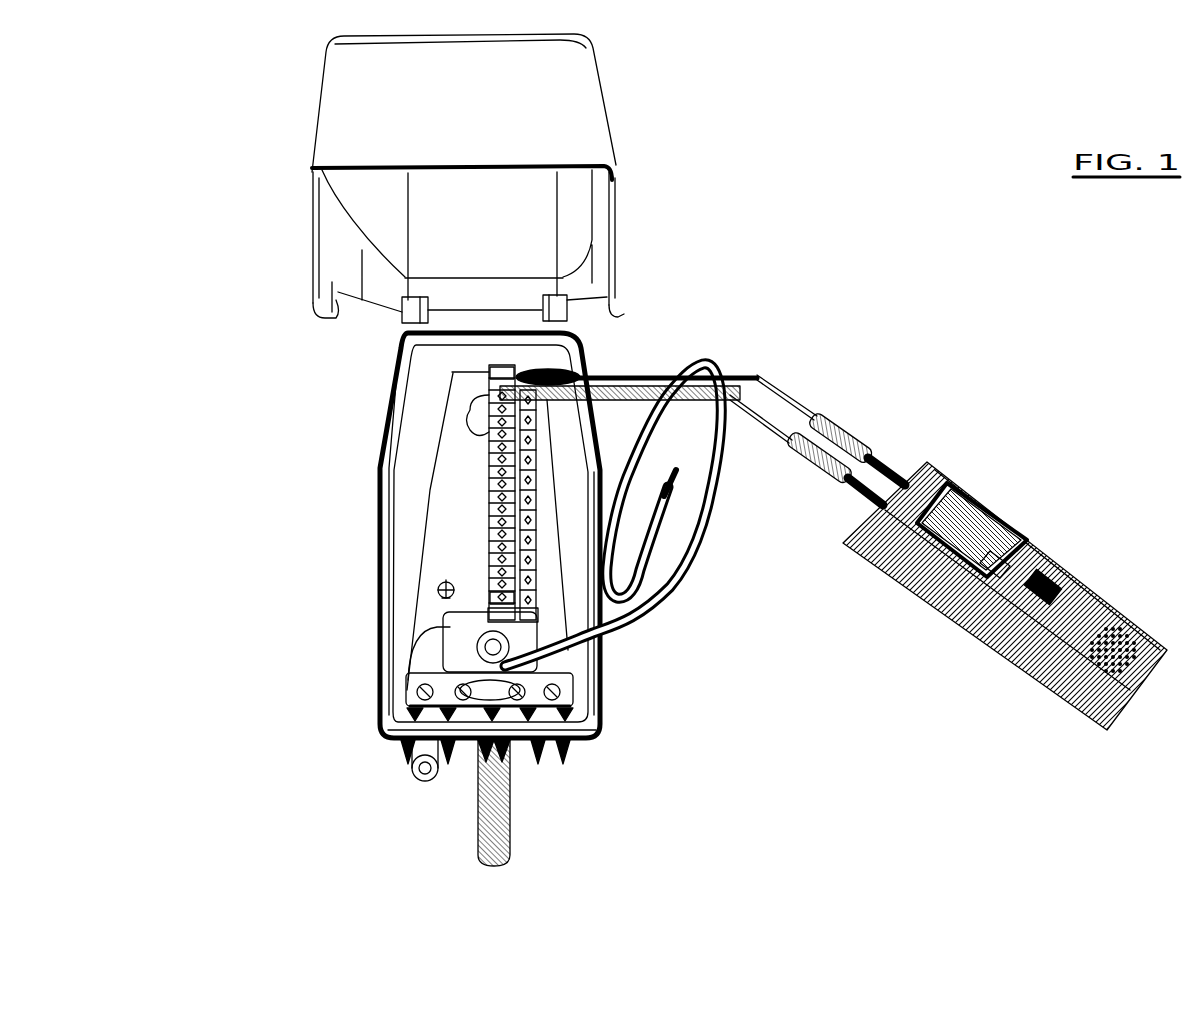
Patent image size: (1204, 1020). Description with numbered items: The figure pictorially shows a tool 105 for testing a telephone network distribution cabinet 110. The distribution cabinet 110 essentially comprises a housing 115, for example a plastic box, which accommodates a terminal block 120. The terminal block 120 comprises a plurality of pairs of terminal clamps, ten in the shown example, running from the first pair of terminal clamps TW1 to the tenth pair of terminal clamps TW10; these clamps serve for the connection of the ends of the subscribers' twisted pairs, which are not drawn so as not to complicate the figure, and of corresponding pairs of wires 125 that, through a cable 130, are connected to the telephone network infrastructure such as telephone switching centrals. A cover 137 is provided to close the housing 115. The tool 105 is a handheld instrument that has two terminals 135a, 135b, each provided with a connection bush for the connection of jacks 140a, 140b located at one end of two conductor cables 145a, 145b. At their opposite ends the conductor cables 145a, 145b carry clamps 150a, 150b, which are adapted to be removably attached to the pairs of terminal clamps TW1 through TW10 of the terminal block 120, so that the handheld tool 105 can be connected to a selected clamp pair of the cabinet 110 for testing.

The tool 105 is at (1076, 512).
The telephone network distribution cabinet 110 is at (243, 319).
The housing 115 is at (385, 504).
The terminal block 120 is at (487, 490).
The pairs of wires 125 is at (680, 595).
The cable 130 is at (475, 825).
The terminal 135a is at (903, 472).
The terminal 135b is at (865, 500).
The cover 137 is at (312, 136).
The jack 140a is at (828, 438).
The jack 140b is at (803, 468).
The conductor cable 145a is at (577, 367).
The conductor cable 145b is at (752, 422).
The clamp 150a is at (637, 378).
The clamp 150b is at (548, 395).
The pair of terminal clamps TW1 is at (481, 388).
The pair of terminal clamps TW10 is at (481, 598).